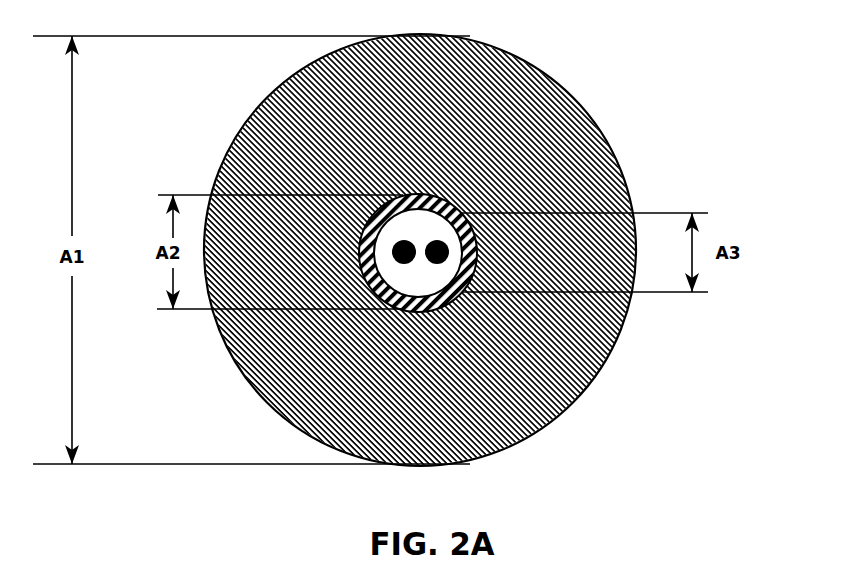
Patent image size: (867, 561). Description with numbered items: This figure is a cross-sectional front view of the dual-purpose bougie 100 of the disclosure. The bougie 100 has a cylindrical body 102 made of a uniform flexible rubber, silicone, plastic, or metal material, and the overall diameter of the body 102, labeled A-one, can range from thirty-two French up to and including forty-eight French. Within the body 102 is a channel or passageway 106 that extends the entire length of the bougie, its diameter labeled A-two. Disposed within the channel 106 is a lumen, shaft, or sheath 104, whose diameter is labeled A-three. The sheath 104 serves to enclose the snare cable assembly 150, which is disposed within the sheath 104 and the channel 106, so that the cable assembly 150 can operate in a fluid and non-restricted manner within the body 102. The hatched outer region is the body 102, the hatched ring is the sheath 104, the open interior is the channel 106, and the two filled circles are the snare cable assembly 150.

The bougie 100 is at (672, 95).
The body 102 is at (512, 92).
The sheath 104 is at (445, 298).
The channel 106 is at (418, 222).
The snare cable assembly 150 is at (447, 268).